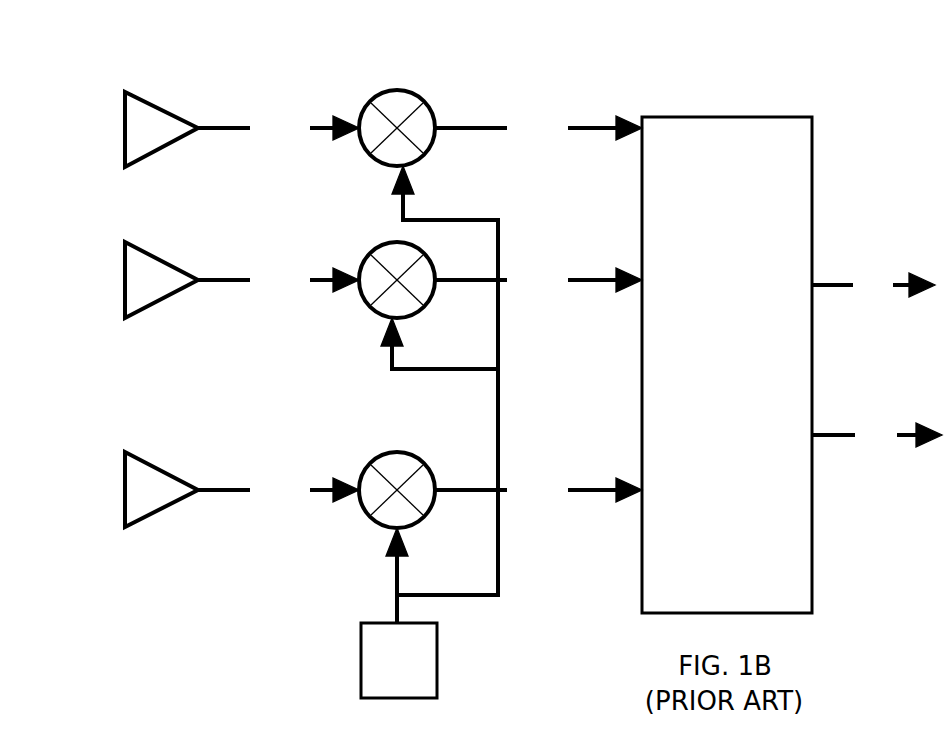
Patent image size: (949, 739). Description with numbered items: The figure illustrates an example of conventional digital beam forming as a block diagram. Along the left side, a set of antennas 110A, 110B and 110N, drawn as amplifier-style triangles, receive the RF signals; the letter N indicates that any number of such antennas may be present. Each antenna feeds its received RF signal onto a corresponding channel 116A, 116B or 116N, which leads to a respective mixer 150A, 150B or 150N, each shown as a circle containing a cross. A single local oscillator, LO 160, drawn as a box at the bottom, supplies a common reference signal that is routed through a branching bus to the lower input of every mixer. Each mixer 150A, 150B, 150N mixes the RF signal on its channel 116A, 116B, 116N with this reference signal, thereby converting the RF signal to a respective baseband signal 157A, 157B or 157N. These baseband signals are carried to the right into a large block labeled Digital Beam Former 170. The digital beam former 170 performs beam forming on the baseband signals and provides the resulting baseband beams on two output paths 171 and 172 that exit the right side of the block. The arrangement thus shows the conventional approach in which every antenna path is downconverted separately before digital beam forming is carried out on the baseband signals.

The antenna 110A is at (125, 130).
The antenna 110B is at (125, 281).
The antenna 110N is at (125, 491).
The channel 116A is at (278, 128).
The channel 116B is at (278, 280).
The channel 116N is at (278, 490).
The mixer 150A is at (397, 90).
The mixer 150B is at (390, 242).
The mixer 150N is at (397, 452).
The baseband signal 157A is at (538, 128).
The baseband signal 157B is at (538, 280).
The baseband signal 157N is at (538, 490).
The LO 160 is at (361, 681).
The digital beam former 170 is at (785, 117).
The path 171 is at (873, 285).
The path 172 is at (877, 435).